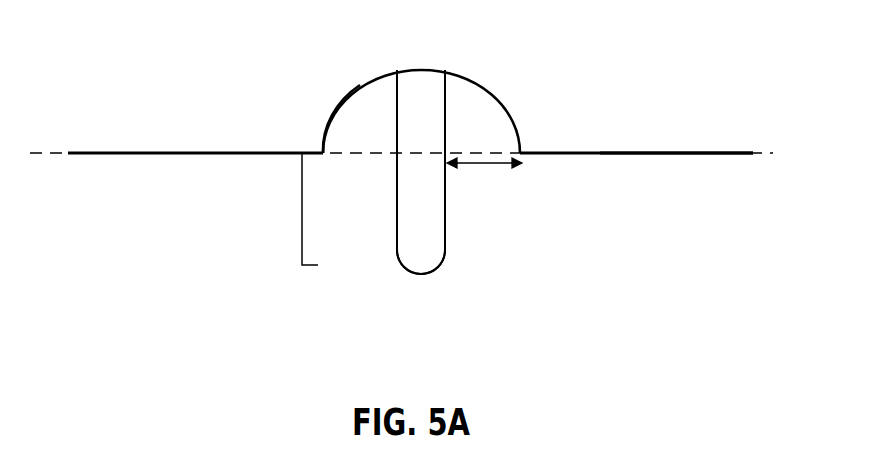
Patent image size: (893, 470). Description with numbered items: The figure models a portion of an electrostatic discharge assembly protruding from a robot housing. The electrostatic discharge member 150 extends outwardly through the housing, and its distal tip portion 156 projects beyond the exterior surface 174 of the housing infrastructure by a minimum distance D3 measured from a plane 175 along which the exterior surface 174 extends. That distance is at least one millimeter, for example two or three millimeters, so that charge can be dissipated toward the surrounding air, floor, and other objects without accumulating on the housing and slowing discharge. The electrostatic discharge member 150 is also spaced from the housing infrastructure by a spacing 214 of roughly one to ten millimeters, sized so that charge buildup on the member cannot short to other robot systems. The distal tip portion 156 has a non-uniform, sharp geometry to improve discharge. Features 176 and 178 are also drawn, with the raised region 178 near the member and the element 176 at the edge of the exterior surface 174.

The electrostatic discharge member 150 is at (446, 190).
The distal tip portion 156 is at (453, 272).
The exterior surface 174 is at (648, 153).
The plane 175 is at (338, 152).
The surface end / edge 176 is at (733, 152).
The bump / dome protrusion 178 is at (480, 87).
The spacing 214 is at (495, 168).
The minimum distance D3 is at (302, 211).